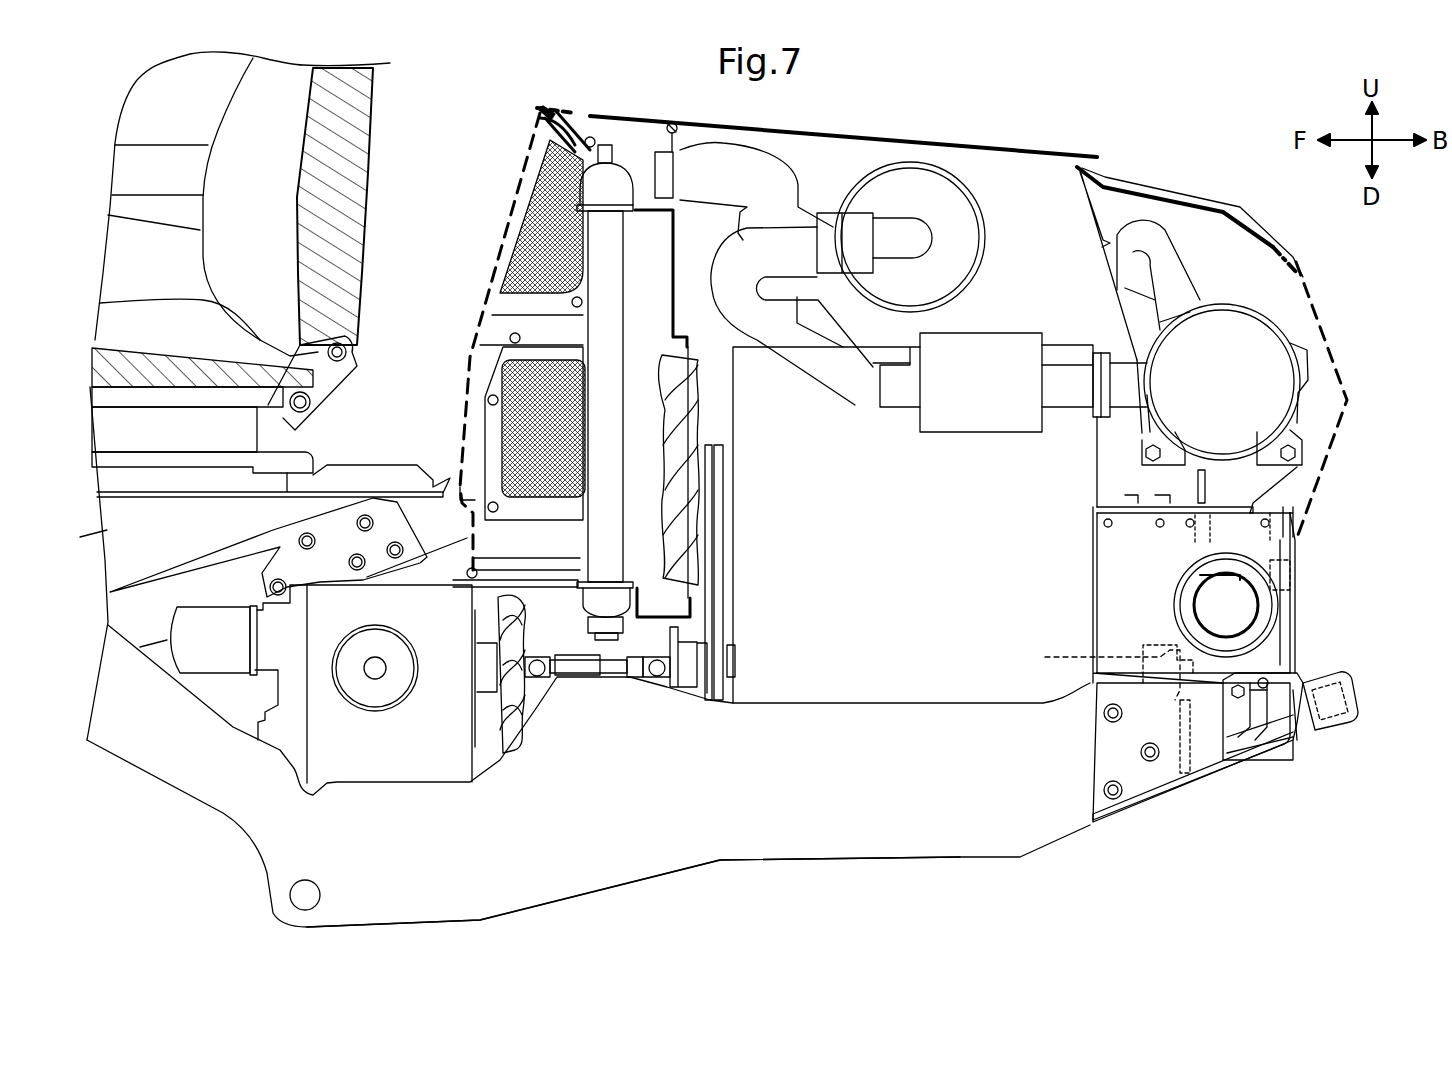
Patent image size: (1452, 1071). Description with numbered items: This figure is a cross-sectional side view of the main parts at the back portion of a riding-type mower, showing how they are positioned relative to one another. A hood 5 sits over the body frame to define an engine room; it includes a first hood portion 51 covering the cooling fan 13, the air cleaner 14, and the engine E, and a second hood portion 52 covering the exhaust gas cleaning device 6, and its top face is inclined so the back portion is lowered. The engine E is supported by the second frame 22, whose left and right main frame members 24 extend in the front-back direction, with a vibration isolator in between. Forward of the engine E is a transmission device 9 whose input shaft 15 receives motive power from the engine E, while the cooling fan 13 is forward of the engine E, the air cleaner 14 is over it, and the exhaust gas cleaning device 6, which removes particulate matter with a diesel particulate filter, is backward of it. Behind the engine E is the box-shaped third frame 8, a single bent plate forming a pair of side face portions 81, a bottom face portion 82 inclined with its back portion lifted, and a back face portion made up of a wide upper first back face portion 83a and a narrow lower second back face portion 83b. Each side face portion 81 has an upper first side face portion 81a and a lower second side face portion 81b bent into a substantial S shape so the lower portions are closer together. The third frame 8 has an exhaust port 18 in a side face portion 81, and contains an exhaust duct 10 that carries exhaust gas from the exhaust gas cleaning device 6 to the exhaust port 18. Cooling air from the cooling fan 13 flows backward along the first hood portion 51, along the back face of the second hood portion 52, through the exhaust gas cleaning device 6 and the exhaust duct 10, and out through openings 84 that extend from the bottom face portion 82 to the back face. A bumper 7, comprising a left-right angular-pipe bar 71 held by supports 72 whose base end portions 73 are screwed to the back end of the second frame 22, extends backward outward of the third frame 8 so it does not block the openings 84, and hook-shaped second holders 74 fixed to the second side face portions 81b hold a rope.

The hood 5 is at (942, 309).
The first hood portion 51 is at (900, 140).
The second hood portion 52 is at (1140, 192).
The cooling fan 13 is at (665, 375).
The air cleaner 14 is at (953, 203).
The exhaust duct 10 is at (1128, 270).
The engine E is at (976, 360).
The exhaust gas cleaning device 6 is at (1253, 350).
The third frame 8 is at (1273, 510).
The side face portion 81 is at (1140, 663).
The first side face portion 81a is at (1140, 553).
The second side face portion 81b is at (1127, 740).
The exhaust port 18 is at (1180, 612).
The first back face portion 83a is at (1300, 618).
The second back face portion 83b is at (1307, 723).
The bumper 7 is at (1212, 705).
The bar 71 is at (1345, 690).
The support 72 is at (1310, 730).
The base end portion 73 is at (1077, 671).
The second holder 74 is at (1273, 727).
The opening 84 is at (1247, 733).
The bottom face portion 82 is at (1163, 800).
The transmission device 9 is at (377, 763).
The input shaft 15 is at (480, 720).
The second frame 22 is at (636, 881).
The main frame member 24 is at (883, 835).